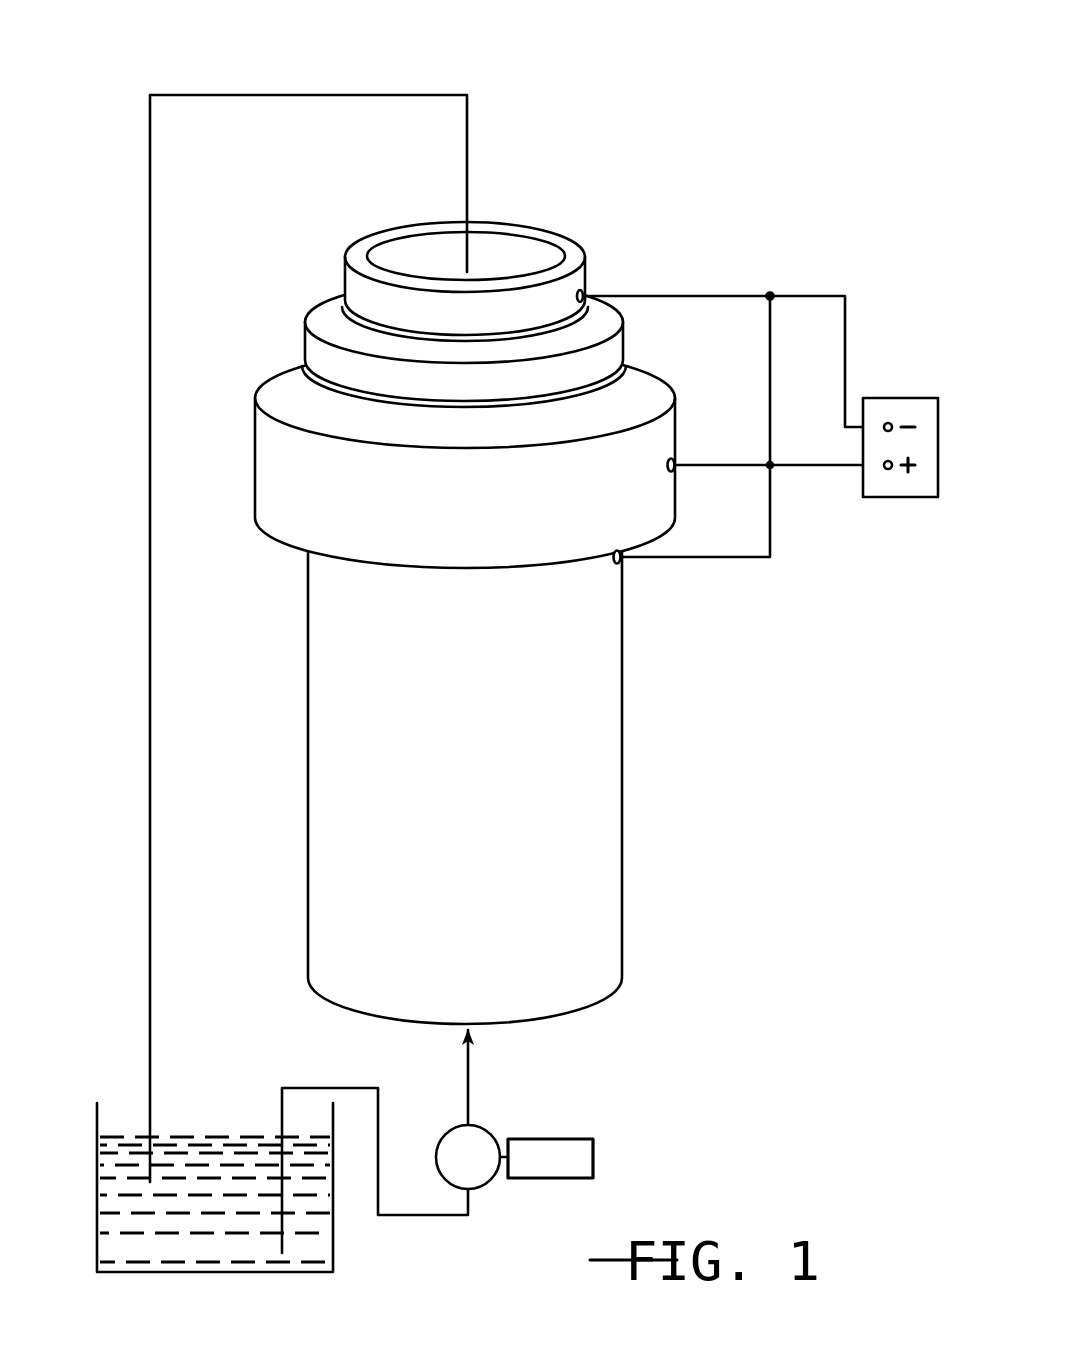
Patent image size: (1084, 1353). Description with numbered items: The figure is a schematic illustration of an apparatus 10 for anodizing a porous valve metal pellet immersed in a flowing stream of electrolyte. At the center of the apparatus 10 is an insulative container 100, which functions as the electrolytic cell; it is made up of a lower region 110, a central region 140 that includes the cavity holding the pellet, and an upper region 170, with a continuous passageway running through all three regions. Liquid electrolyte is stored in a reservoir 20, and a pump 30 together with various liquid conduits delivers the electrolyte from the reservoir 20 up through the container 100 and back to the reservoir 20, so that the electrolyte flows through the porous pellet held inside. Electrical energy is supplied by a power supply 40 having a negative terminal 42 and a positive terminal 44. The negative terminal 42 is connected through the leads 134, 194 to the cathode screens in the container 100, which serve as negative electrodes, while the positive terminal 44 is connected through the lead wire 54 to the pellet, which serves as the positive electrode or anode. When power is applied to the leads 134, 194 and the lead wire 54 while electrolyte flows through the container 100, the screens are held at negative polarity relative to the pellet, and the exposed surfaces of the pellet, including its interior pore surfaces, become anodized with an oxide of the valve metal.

The apparatus 10 is at (279, 79).
The reservoir 20 is at (97, 1220).
The pump 30 is at (490, 1131).
The power supply 40 is at (913, 500).
The negative terminal 42 is at (889, 419).
The positive terminal 44 is at (887, 473).
The lead wire 54 is at (749, 467).
The insulative container 100 is at (566, 222).
The lower region 110 is at (297, 810).
The lead 134 is at (689, 561).
The central region 140 is at (262, 552).
The upper region 170 is at (319, 262).
The lead 194 is at (683, 298).